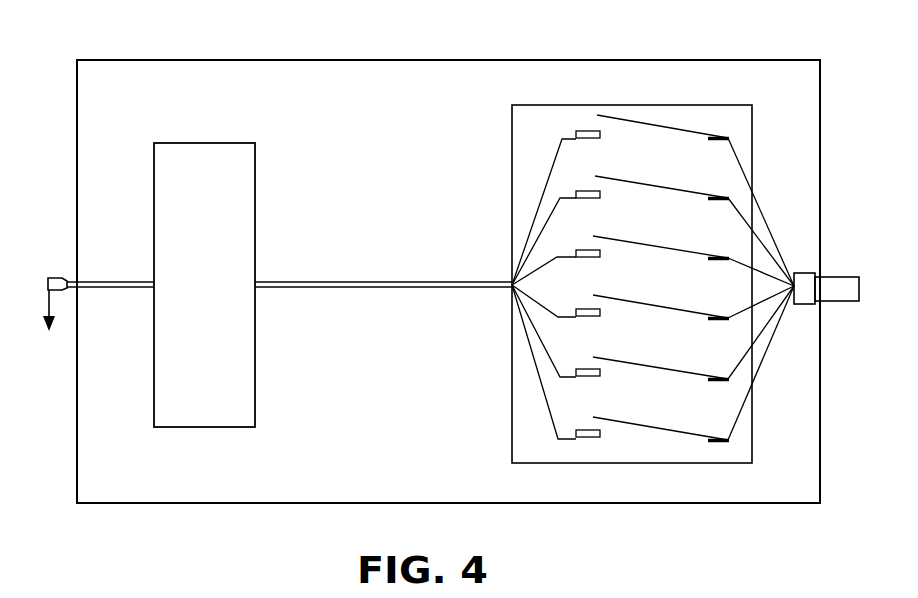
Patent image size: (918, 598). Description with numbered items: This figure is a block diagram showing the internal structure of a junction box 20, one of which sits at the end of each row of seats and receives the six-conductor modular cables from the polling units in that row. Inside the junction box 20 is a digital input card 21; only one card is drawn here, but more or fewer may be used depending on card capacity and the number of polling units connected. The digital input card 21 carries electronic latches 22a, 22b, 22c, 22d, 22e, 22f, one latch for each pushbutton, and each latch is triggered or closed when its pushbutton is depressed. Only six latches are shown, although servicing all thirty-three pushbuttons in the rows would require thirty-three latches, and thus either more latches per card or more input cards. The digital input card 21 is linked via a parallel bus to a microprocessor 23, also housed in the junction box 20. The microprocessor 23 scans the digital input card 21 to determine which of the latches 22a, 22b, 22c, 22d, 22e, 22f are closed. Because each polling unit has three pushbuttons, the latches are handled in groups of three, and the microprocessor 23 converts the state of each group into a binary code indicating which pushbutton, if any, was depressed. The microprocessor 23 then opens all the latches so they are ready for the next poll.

The junction box 20 is at (450, 60).
The digital input card 21 is at (512, 173).
The electronic latch 22a is at (614, 128).
The electronic latch 22b is at (608, 197).
The electronic latch 22c is at (610, 262).
The electronic latch 22d is at (618, 322).
The electronic latch 22e is at (615, 380).
The electronic latch 22f is at (609, 428).
The microprocessor 23 is at (213, 296).